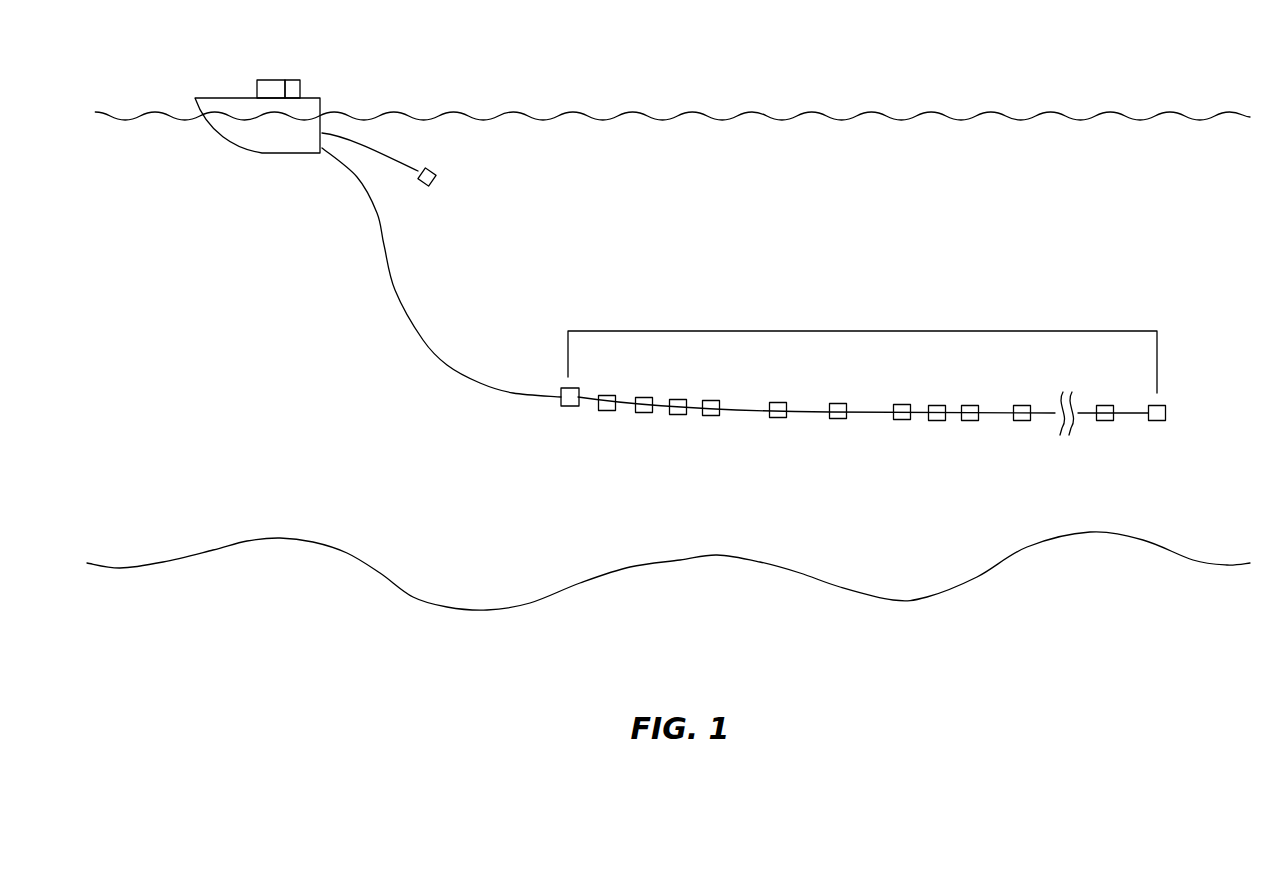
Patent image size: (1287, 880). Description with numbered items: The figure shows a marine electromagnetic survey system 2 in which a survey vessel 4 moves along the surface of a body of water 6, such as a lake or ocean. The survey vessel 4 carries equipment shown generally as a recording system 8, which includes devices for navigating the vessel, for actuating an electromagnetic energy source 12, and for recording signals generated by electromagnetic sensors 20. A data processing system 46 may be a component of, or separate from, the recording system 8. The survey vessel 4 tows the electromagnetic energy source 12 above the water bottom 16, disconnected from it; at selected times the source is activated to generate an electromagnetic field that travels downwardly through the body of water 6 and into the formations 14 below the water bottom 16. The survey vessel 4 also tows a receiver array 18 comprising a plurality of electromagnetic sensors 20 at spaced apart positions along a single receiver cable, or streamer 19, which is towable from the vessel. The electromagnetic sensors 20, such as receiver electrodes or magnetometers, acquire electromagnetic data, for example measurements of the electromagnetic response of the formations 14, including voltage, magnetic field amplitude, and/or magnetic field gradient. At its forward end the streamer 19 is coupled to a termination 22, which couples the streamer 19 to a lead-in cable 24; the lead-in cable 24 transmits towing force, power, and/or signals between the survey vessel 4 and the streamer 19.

The marine electromagnetic survey system 2 is at (315, 272).
The survey vessel 4 is at (308, 104).
The body of water 6 is at (778, 203).
The recording system 8 is at (256, 92).
The electromagnetic energy source 12 is at (425, 188).
The formations 14 is at (668, 581).
The water bottom 16 is at (840, 587).
The receiver array 18 is at (860, 331).
The streamer 19 is at (1134, 415).
The electromagnetic sensors 20 is at (607, 411).
The termination 22 is at (570, 387).
The lead-in cable 24 is at (427, 341).
The data processing system 46 is at (292, 79).